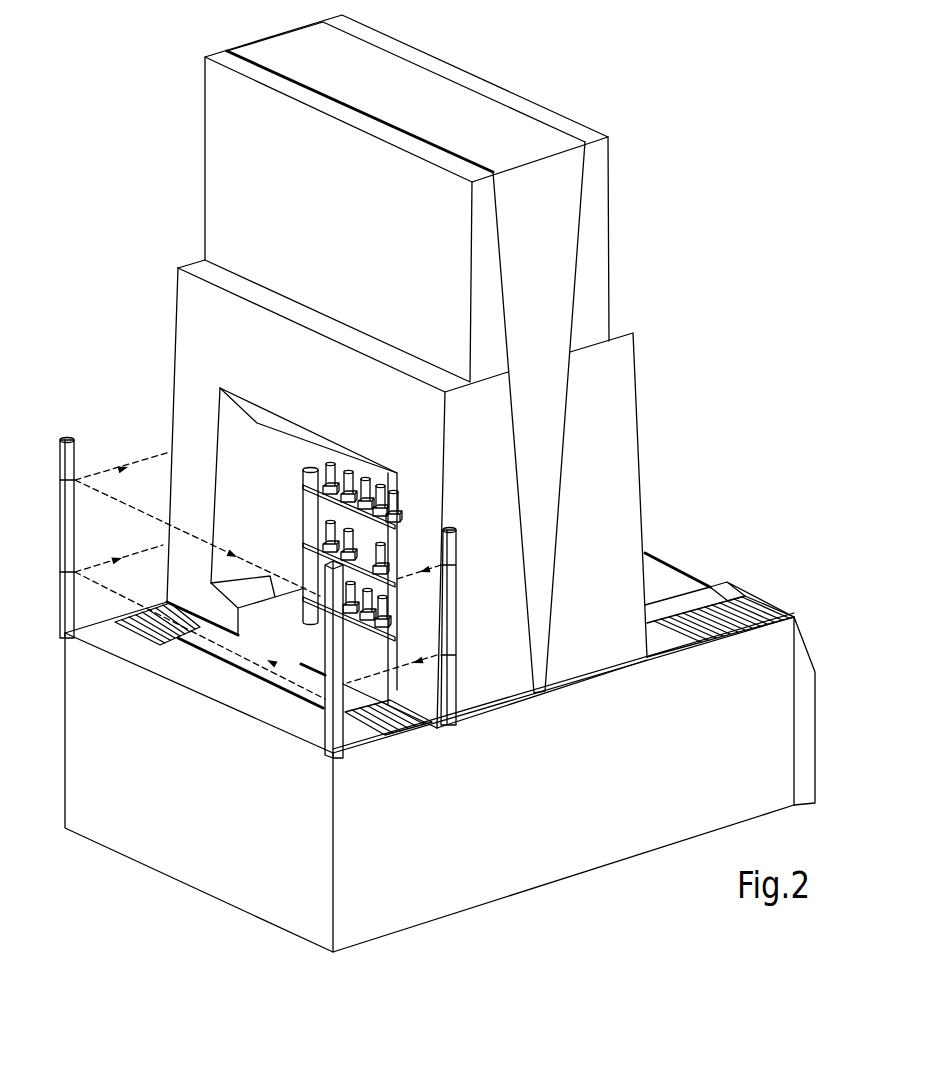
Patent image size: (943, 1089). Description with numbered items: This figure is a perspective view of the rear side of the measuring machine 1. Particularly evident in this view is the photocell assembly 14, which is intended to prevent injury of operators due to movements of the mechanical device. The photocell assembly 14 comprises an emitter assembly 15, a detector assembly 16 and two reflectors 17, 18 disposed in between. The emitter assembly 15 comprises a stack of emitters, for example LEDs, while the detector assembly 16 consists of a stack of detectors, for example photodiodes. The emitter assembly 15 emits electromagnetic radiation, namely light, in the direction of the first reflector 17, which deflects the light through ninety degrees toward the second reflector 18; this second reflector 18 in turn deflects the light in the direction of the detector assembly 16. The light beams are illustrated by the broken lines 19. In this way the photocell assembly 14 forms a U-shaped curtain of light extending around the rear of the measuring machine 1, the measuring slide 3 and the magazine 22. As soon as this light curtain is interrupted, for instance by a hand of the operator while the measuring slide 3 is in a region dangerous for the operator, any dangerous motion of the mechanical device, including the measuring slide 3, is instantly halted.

The measuring machine 1 is at (171, 182).
The measuring slide 3 is at (188, 309).
The photocell assembly 14 is at (470, 626).
The emitter assembly 15 is at (452, 543).
The detector assembly 16 is at (175, 411).
The reflector 17 is at (328, 646).
The reflector 18 is at (66, 437).
The light beams 19 is at (97, 495).
The magazine 22 is at (276, 504).